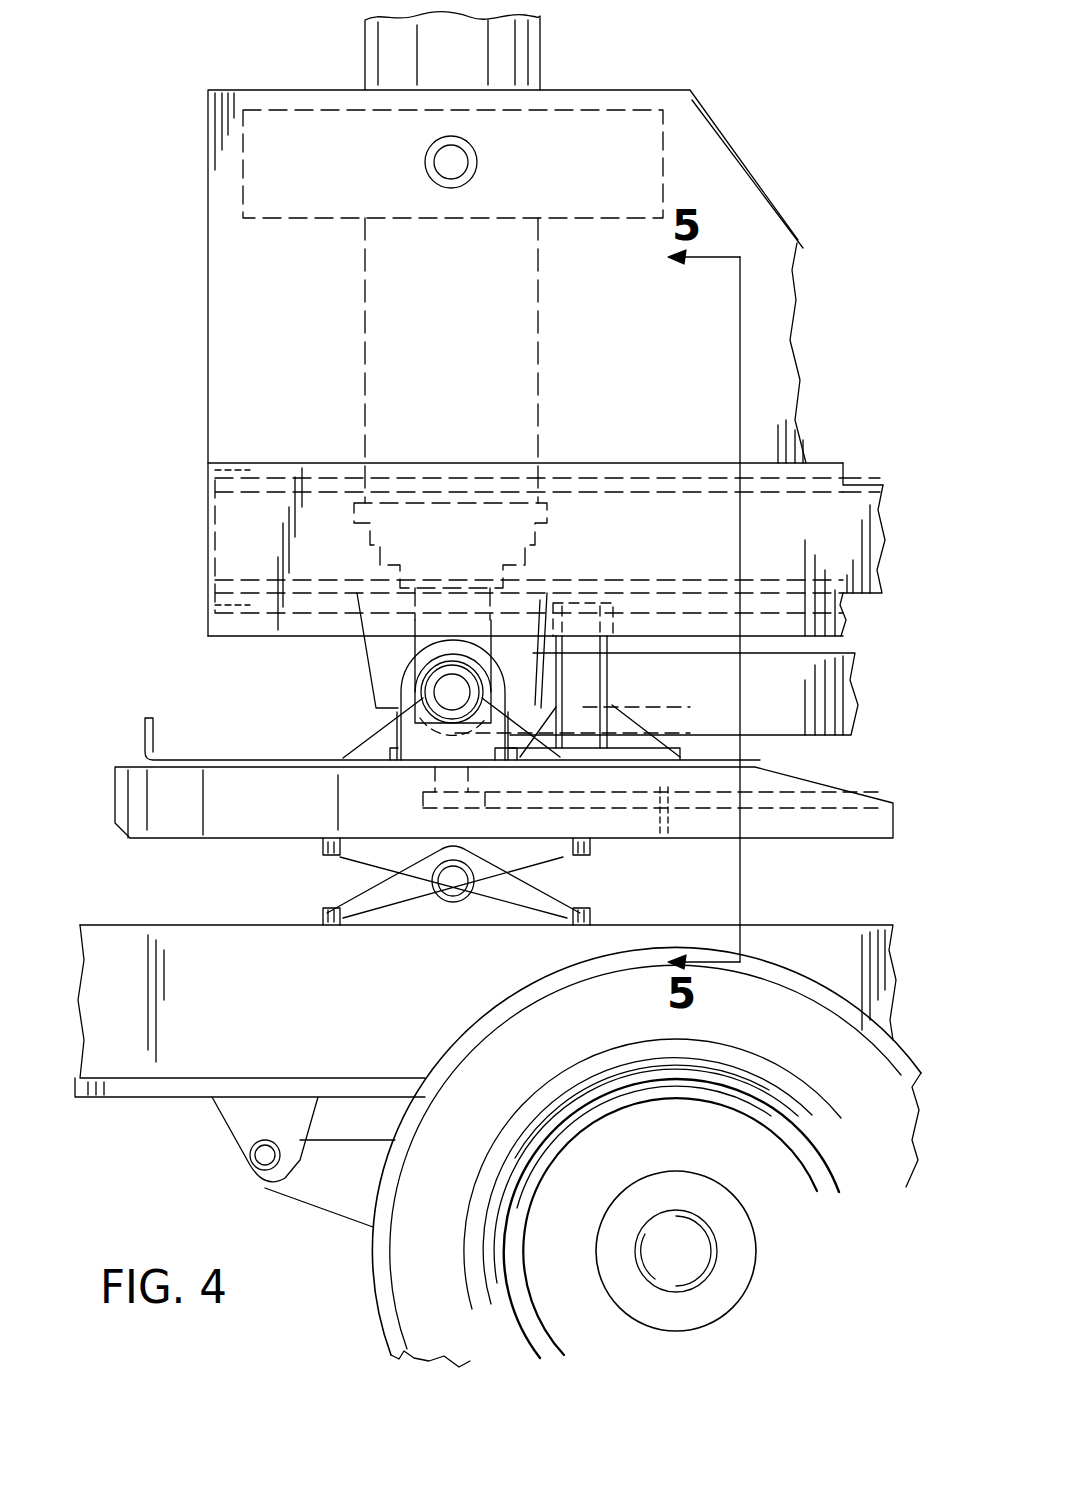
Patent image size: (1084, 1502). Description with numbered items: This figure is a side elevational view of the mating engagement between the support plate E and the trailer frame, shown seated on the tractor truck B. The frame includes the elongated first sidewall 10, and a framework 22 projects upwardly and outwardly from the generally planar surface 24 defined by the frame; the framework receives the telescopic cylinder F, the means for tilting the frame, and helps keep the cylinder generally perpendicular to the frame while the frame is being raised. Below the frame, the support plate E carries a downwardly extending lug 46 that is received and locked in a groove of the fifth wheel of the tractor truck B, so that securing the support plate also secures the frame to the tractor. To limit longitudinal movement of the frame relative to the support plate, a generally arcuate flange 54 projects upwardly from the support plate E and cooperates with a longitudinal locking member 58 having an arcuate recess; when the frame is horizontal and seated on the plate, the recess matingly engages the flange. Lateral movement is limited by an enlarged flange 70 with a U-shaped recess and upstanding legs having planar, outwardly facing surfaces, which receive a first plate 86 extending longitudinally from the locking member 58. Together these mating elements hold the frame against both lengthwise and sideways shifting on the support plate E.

The framework 22 is at (226, 350).
The telescopic cylinder F is at (538, 386).
The planar surface 24 is at (862, 485).
The first sidewall 10 is at (872, 508).
The longitudinal locking member 58 is at (378, 655).
The arcuate flange 54 is at (400, 712).
The first plate 86 is at (612, 660).
The enlarged flange 70 is at (612, 697).
The support plate E is at (242, 760).
The lug 46 is at (438, 800).
The tractor truck B is at (198, 1084).